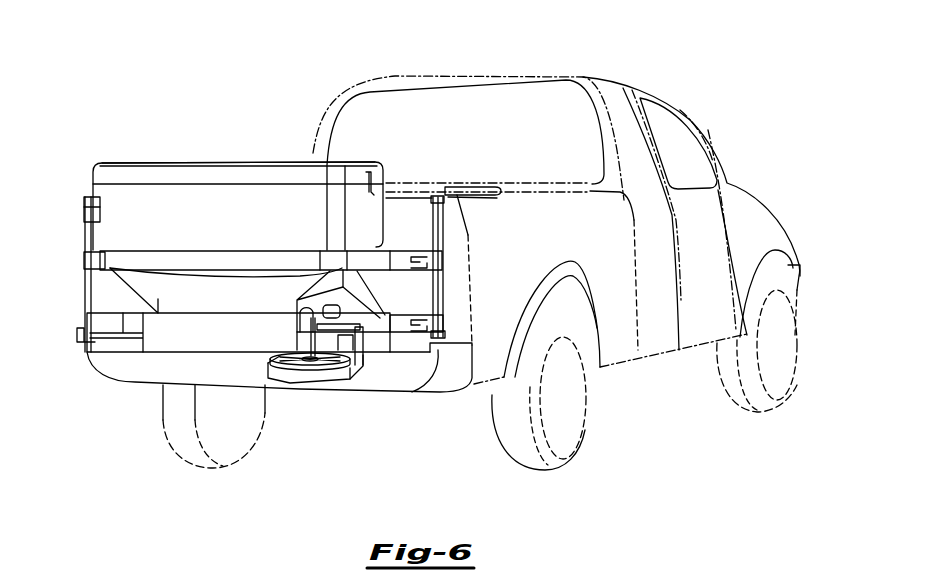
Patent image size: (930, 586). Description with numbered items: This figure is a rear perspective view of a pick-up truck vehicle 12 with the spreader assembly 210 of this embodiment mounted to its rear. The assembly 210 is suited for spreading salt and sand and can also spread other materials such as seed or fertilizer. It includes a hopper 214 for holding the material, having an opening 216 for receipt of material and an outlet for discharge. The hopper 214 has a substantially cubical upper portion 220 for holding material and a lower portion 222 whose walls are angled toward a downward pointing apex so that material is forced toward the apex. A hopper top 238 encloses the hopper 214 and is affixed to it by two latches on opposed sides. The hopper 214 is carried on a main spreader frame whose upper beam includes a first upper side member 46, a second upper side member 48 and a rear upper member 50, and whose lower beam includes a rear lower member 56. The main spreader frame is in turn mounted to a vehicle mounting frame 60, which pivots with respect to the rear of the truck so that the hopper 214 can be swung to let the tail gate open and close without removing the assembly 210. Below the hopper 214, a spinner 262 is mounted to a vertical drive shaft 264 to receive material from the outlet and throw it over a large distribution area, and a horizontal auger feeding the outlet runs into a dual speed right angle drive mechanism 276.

The vehicle 12 is at (641, 89).
The first upper side member 46 is at (88, 258).
The second upper side member 48 is at (377, 243).
The rear upper member 50 is at (265, 267).
The rear lower member 56 is at (227, 328).
The vehicle mounting frame 60 is at (476, 187).
The spreader assembly 210 is at (138, 128).
The hopper 214 is at (92, 192).
The opening 216 is at (383, 170).
The upper portion 220 is at (210, 223).
The lower portion 222 is at (150, 280).
The hopper top 238 is at (241, 172).
The spinner 262 is at (306, 367).
The vertical drive shaft 264 is at (334, 364).
The dual speed right angle drive mechanism 276 is at (330, 325).